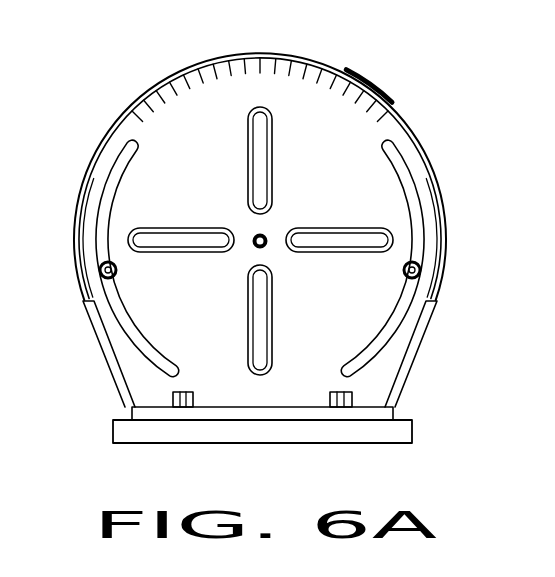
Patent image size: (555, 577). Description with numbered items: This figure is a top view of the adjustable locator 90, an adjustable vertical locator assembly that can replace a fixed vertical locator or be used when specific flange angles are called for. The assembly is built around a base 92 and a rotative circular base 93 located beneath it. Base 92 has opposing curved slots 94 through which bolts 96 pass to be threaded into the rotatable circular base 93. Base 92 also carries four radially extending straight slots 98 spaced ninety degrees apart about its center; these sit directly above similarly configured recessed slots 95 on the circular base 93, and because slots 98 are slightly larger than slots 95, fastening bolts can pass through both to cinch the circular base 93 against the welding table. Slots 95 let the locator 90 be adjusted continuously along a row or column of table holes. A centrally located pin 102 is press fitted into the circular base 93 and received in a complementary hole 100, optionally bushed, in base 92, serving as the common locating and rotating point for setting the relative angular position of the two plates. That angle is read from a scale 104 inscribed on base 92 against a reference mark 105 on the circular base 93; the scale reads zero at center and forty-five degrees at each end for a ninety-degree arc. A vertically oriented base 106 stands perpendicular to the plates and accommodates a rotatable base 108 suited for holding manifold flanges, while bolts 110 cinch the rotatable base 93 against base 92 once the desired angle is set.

The adjustable locator 90 is at (446, 139).
The base 92 is at (348, 176).
The rotative circular base 93 is at (402, 123).
The curved slots 94 is at (425, 233).
The slots 95 is at (375, 225).
The bolts 96 is at (423, 270).
The radially extending straight slots 98 is at (430, 295).
The hole 100 is at (254, 245).
The pin 102 is at (254, 239).
The scale 104 is at (393, 87).
The reference mark 105 is at (263, 53).
The vertically oriented base 106 is at (395, 412).
The rotatable base 108 is at (412, 428).
The bolts 110 is at (352, 395).